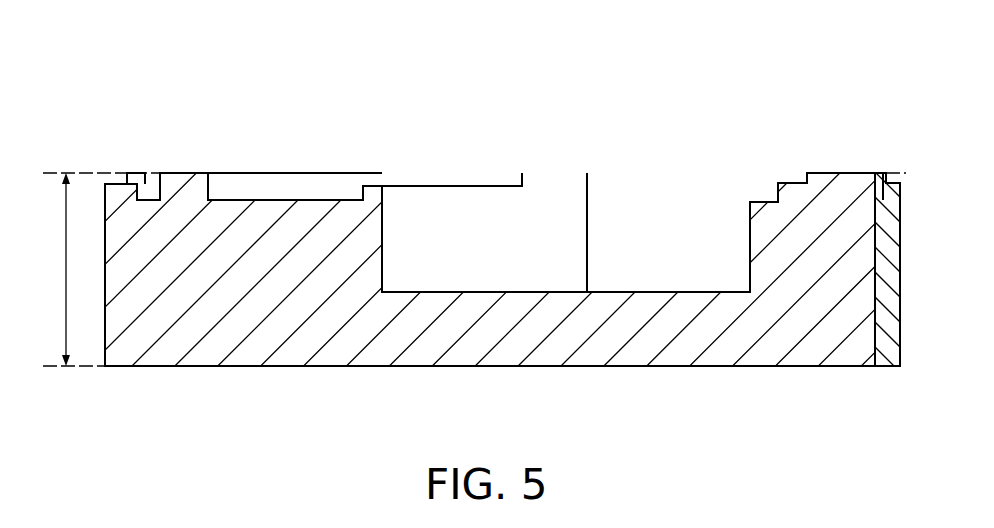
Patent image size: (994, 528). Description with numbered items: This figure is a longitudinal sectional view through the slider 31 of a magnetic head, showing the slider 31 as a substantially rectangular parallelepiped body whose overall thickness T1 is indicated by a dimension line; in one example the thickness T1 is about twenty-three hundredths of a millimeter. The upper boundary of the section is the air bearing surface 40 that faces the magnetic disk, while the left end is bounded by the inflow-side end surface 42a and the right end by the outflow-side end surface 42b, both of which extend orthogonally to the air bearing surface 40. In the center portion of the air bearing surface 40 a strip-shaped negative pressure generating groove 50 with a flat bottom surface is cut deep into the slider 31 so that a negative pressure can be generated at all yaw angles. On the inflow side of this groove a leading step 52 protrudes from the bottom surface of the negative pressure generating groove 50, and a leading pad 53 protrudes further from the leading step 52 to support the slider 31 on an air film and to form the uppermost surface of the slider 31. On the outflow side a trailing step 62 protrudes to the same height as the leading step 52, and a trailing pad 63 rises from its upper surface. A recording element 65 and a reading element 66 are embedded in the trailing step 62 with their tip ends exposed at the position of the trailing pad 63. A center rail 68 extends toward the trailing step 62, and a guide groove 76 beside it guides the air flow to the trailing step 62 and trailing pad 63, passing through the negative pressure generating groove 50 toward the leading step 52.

The slider 31 is at (263, 352).
The air bearing surface 40 is at (747, 168).
The inflow-side end surface 42a is at (103, 350).
The outflow-side end surface 42b is at (900, 350).
The negative pressure generating groove 50 is at (483, 292).
The leading step 52 is at (232, 218).
The leading pad 53 is at (302, 172).
The trailing step 62 is at (793, 198).
The trailing pad 63 is at (828, 172).
The recording element 65 is at (878, 172).
The reading element 66 is at (878, 172).
The center rail 68 is at (622, 172).
The guide groove 76 is at (668, 198).
The thickness of the slider T1 is at (54, 269).